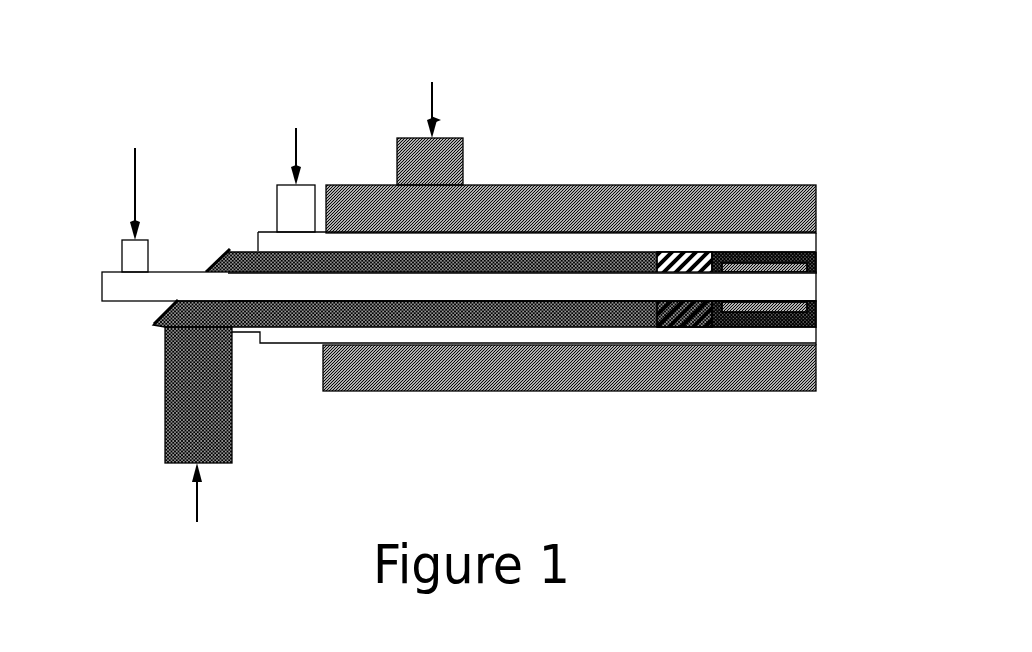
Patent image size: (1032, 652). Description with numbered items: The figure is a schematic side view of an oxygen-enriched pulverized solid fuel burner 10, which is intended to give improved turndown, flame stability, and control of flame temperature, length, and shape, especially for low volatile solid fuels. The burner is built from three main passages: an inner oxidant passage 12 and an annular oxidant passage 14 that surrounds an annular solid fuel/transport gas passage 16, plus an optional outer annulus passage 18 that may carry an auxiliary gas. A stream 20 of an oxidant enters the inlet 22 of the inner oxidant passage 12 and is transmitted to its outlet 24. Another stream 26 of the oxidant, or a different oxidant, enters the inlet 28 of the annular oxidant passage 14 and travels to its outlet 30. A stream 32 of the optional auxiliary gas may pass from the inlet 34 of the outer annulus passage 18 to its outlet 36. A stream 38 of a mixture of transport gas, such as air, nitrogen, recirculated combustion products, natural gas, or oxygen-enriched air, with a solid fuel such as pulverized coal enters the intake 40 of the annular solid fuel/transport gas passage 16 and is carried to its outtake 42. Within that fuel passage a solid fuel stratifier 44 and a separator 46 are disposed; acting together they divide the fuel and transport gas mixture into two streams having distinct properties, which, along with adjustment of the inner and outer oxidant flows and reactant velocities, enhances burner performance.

The oxygen-enriched pulverized solid fuel burner 10 is at (632, 95).
The inner oxidant passage 12 is at (148, 288).
The annular oxidant passage 14 is at (293, 337).
The annular solid fuel/transport gas passage 16 is at (246, 327).
The outer annulus passage 18 is at (498, 392).
The stream of oxidant 20 is at (135, 185).
The inlet of the inner oxidant passage 22 is at (125, 240).
The outlet of the inner oxidant passage 24 is at (817, 287).
The stream of oxidant 26 is at (297, 138).
The inlet of the annular oxidant passage 28 is at (278, 185).
The outlet of the annular oxidant passage 30 is at (817, 242).
The stream of auxiliary gas 32 is at (433, 92).
The inlet of the outer annulus passage 34 is at (452, 138).
The outlet of the outer annulus passage 36 is at (818, 365).
The stream of transport gas and solid fuel mixture 38 is at (197, 502).
The intake of the annular solid fuel/transport gas passage 40 is at (173, 463).
The outtake of the annular solid fuel/transport gas passage 42 is at (817, 265).
The solid fuel stratifier 44 is at (688, 252).
The separator 46 is at (753, 327).